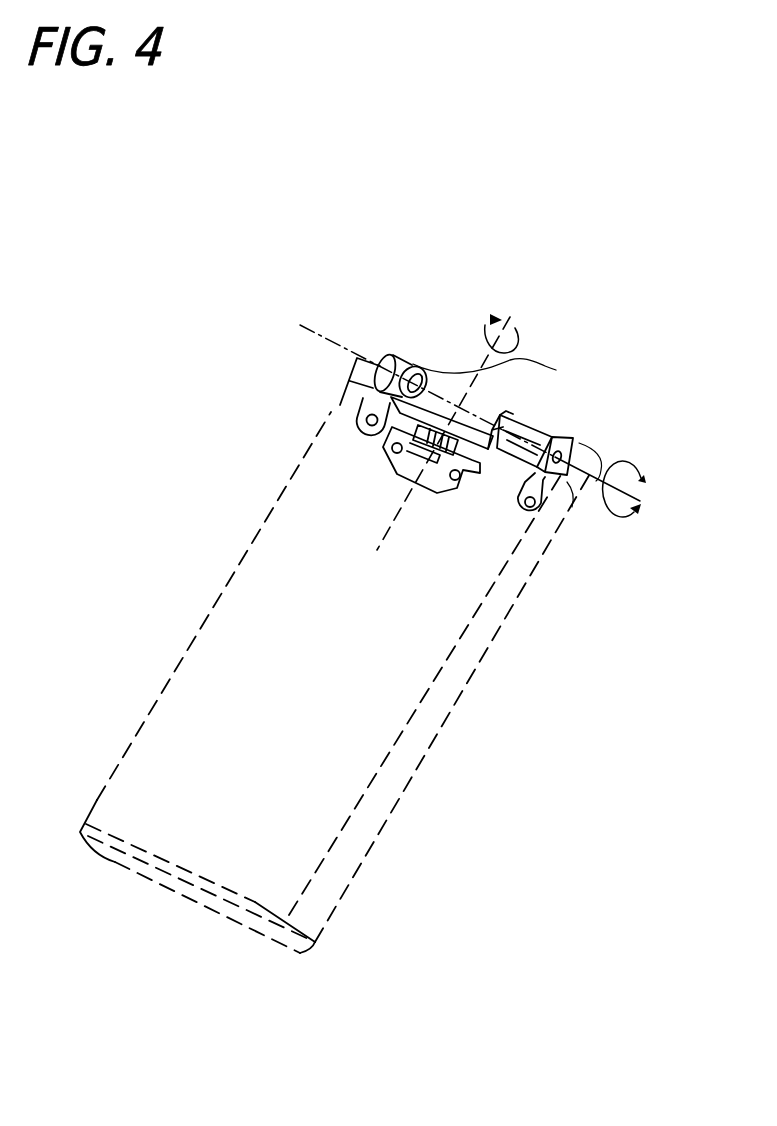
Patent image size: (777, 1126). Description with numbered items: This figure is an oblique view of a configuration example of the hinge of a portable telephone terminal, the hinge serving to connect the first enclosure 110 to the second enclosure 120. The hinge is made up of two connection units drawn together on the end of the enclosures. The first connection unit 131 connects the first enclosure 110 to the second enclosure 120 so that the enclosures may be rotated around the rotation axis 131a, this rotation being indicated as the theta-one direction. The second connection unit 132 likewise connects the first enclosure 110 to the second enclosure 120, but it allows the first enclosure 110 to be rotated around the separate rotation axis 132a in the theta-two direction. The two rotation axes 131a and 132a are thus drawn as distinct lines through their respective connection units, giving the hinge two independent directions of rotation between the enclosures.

The first enclosure 110 is at (262, 585).
The second enclosure 120 is at (422, 734).
The first connection unit 131 is at (537, 418).
The rotation axis 131a is at (318, 326).
The second connection unit 132 is at (440, 488).
The rotation axis 132a is at (392, 540).